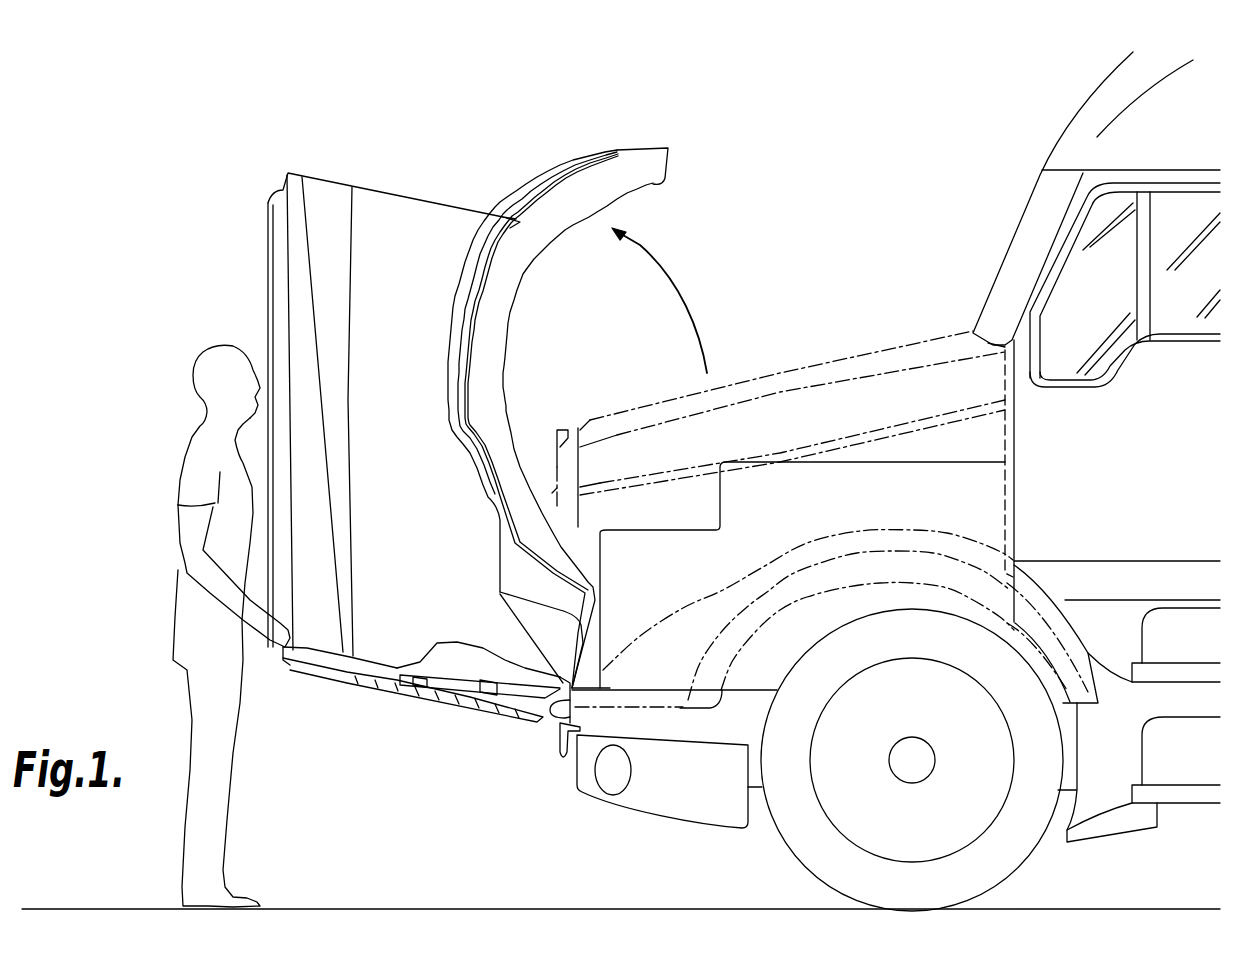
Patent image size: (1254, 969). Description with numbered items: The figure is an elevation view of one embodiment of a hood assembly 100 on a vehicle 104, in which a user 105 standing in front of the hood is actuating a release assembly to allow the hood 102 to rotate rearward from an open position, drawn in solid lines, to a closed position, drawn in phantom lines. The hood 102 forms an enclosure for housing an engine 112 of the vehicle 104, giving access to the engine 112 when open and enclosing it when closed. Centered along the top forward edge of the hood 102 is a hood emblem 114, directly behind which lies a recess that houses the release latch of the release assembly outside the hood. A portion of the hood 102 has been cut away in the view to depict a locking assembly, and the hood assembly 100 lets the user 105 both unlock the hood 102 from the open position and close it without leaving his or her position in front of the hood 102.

The hood assembly 100 is at (399, 159).
The hood 102 is at (267, 262).
The vehicle 104 is at (1068, 137).
The user 105 is at (191, 437).
The engine 112 is at (800, 462).
The hood emblem 114 is at (283, 667).